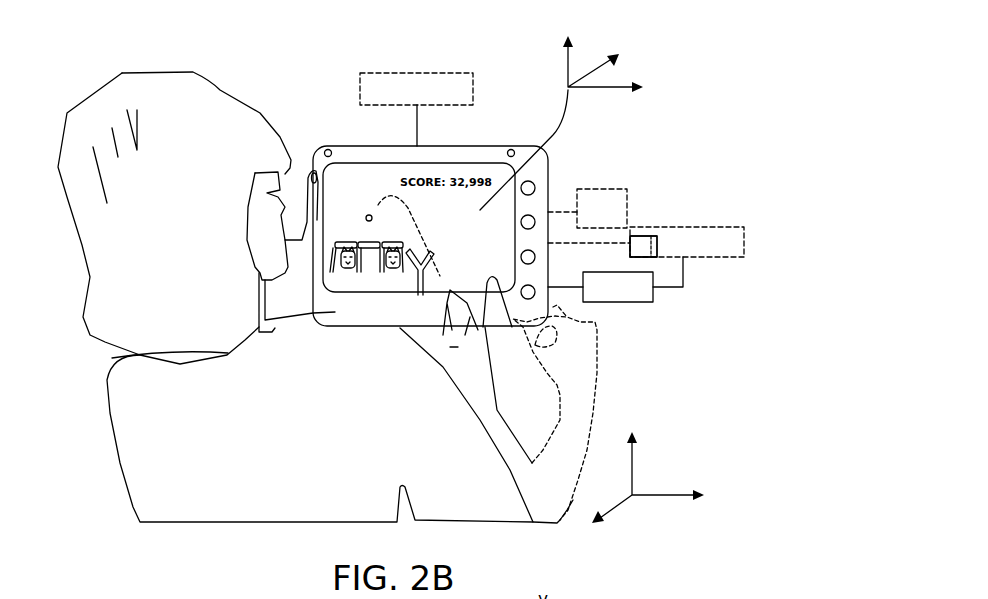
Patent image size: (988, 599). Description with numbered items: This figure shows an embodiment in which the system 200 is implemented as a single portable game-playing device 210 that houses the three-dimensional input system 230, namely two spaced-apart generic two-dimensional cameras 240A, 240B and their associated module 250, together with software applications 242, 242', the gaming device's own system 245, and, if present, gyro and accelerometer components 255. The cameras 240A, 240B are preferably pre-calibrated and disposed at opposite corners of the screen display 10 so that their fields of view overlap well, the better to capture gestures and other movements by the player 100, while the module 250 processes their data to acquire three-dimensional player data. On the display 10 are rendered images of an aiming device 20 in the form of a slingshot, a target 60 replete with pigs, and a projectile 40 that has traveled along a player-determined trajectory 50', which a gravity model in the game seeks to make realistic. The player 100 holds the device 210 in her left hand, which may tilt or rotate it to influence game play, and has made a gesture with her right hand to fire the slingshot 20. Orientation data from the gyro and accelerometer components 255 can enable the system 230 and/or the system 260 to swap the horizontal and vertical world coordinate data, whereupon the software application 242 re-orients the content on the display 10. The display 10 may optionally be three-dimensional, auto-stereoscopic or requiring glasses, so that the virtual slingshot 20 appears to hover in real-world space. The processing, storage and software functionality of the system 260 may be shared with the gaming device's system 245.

The screen display 10 is at (352, 347).
The aiming device 20 is at (437, 256).
The projectile 40 is at (365, 216).
The trajectory 50' is at (420, 236).
The target 60 is at (367, 240).
The player 100 is at (626, 388).
The system 200 is at (643, 172).
The portable device 210 is at (556, 171).
The system 230 is at (314, 100).
The camera 240A is at (329, 148).
The camera 240B is at (511, 148).
The software application 242 is at (692, 227).
The software application 242' is at (643, 246).
The system 245 is at (734, 254).
The module 250 is at (436, 101).
The gyro, accelerometer components 255 is at (621, 223).
The system 260 is at (637, 299).